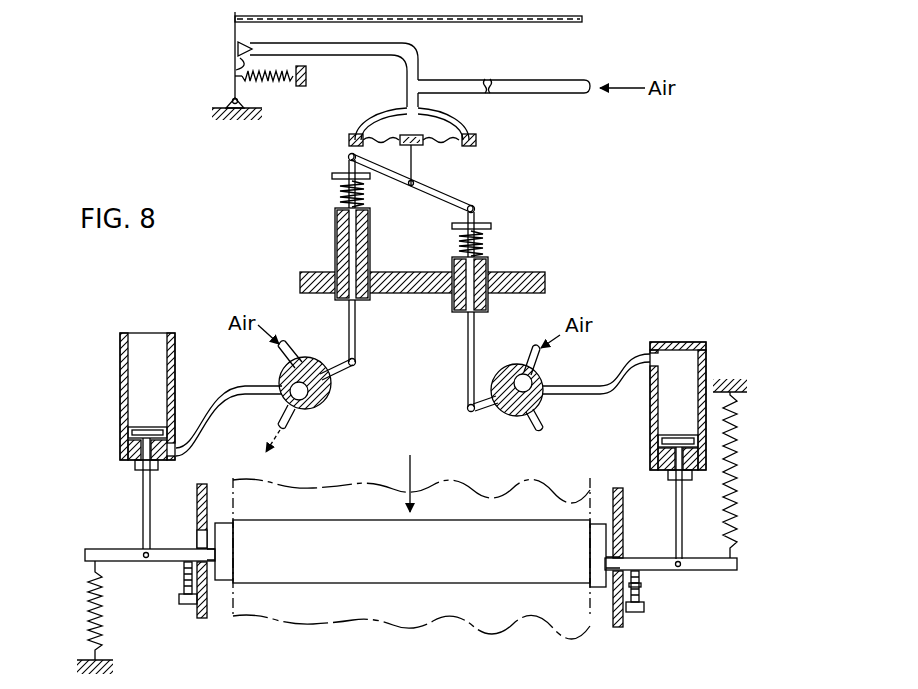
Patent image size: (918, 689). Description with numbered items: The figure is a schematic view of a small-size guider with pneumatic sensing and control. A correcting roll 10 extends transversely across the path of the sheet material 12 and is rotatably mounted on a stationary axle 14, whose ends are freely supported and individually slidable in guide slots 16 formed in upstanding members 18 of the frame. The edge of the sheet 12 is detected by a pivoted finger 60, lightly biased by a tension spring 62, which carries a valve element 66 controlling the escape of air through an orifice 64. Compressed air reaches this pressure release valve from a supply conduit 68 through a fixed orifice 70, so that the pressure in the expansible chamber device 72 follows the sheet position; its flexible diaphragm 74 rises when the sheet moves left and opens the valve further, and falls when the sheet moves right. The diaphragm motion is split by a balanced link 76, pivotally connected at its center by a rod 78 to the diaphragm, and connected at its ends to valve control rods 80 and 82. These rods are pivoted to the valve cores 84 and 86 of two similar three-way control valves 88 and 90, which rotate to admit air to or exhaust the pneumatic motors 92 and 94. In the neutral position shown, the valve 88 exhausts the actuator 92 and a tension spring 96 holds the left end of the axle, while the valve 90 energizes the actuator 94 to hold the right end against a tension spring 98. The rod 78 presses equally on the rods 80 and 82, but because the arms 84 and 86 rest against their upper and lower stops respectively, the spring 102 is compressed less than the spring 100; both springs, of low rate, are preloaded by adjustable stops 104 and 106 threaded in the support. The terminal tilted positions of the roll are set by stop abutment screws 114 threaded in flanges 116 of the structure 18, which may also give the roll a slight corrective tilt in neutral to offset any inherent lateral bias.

The correcting roll 10 is at (445, 588).
The sheet material 12 is at (572, 20).
The stationary axle 14 is at (125, 549).
The guide slots 16 is at (198, 544).
The upstanding members 18 is at (197, 606).
The pivoted finger 60 is at (234, 30).
The tension spring 62 is at (264, 84).
The orifice 64 is at (247, 45).
The valve element 66 is at (234, 70).
The supply conduit 68 is at (549, 81).
The fixed orifice 70 is at (486, 81).
The expansible chamber device 72 is at (464, 127).
The flexible diaphragm 74 is at (447, 145).
The balanced link 76 is at (455, 198).
The rod 78 is at (414, 167).
The valve control rod 80 is at (357, 325).
The valve control rod 82 is at (467, 348).
The valve core 84 is at (356, 368).
The valve core 86 is at (476, 416).
The three-way control valve 88 is at (283, 374).
The three-way control valve 90 is at (541, 405).
The pneumatic motor 92 is at (121, 381).
The pneumatic motor 94 is at (706, 357).
The tension spring 96 is at (91, 625).
The tension spring 98 is at (738, 433).
The spring 100 is at (334, 191).
The spring 102 is at (489, 242).
The adjustable stop 104 is at (334, 212).
The adjustable stop 106 is at (489, 266).
The stop abutment screws 114 is at (180, 599).
The flanges 116 is at (641, 588).